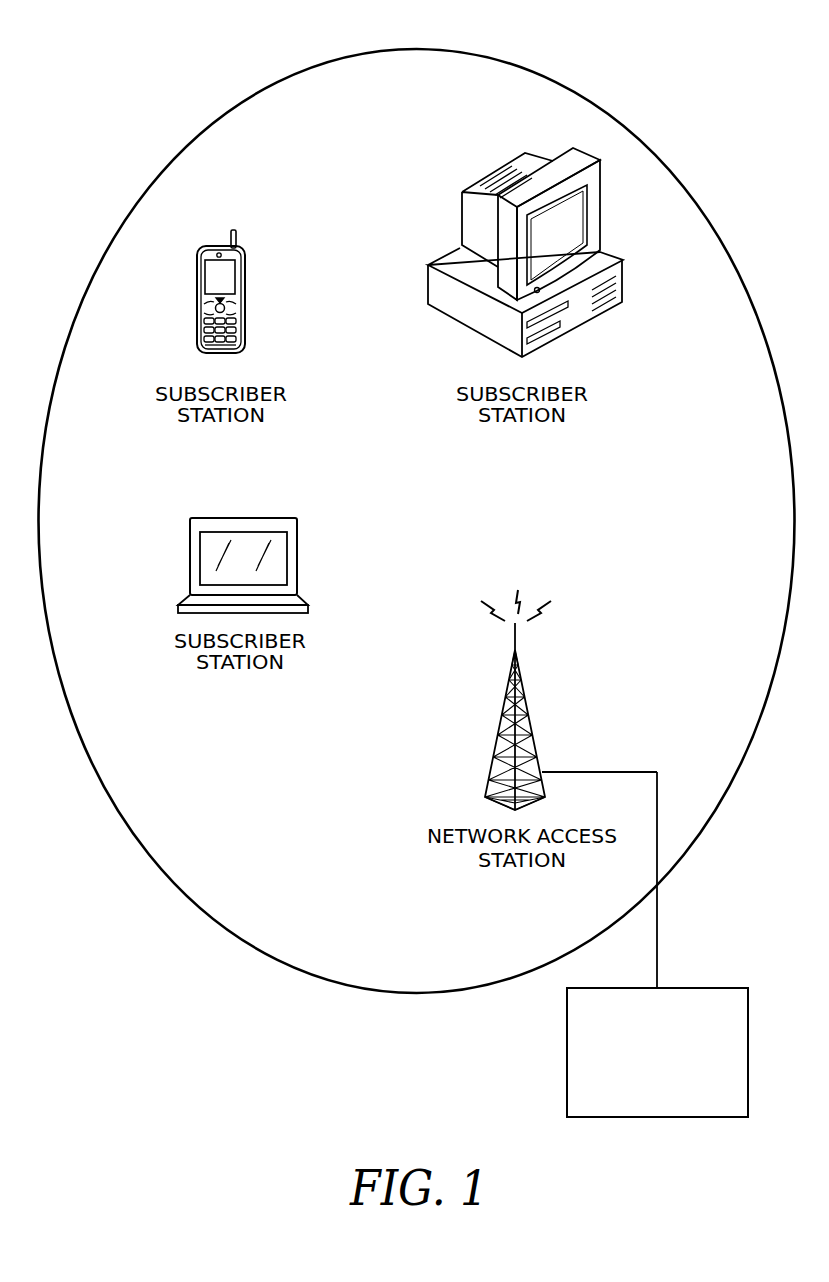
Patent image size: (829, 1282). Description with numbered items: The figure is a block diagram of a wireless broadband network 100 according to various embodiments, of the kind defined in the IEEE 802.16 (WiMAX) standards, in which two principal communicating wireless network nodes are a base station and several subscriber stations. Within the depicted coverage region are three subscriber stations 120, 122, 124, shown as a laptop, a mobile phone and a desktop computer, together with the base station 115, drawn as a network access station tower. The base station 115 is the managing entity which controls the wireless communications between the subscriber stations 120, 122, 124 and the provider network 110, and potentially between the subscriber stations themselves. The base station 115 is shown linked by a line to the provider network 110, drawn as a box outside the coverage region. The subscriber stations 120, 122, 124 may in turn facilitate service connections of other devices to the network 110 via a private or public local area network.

The wireless communication system 100 is at (734, 44).
The provider network 110 is at (725, 987).
The base station 115 is at (533, 741).
The subscriber station 120 is at (281, 518).
The subscriber station 122 is at (241, 250).
The subscriber station 124 is at (602, 253).